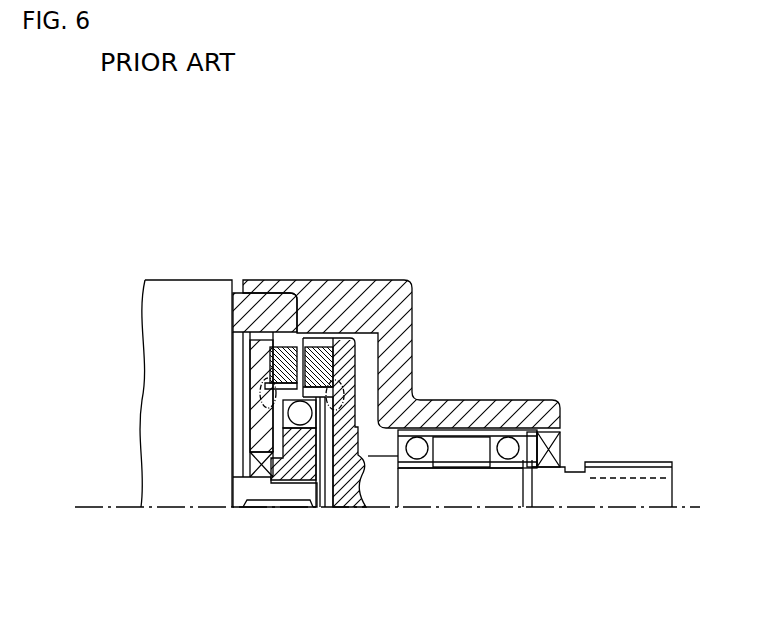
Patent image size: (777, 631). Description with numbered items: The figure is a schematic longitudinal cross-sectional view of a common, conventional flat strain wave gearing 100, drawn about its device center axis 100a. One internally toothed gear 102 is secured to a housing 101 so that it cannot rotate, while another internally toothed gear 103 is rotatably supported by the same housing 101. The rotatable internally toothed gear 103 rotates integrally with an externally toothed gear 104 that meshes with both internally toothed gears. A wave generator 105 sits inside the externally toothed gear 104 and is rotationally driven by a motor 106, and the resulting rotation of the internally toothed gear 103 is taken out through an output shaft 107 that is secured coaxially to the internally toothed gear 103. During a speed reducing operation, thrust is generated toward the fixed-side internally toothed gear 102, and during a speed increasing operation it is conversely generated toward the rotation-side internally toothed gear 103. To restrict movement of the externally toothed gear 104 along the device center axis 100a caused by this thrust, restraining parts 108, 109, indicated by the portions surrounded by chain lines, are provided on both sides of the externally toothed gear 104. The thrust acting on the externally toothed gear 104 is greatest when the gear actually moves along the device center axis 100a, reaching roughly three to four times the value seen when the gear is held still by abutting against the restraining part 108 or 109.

The flat strain wave gearing 100 is at (467, 225).
The device center axis 100a is at (100, 507).
The housing 101 is at (283, 280).
The internally toothed gear 102 is at (278, 363).
The internally toothed gear 103 is at (340, 368).
The externally toothed gear 104 is at (318, 363).
The wave generator 105 is at (300, 458).
The motor 106 is at (162, 276).
The output shaft 107 is at (423, 492).
The restraining part 108 is at (258, 385).
The restraining part 109 is at (345, 385).